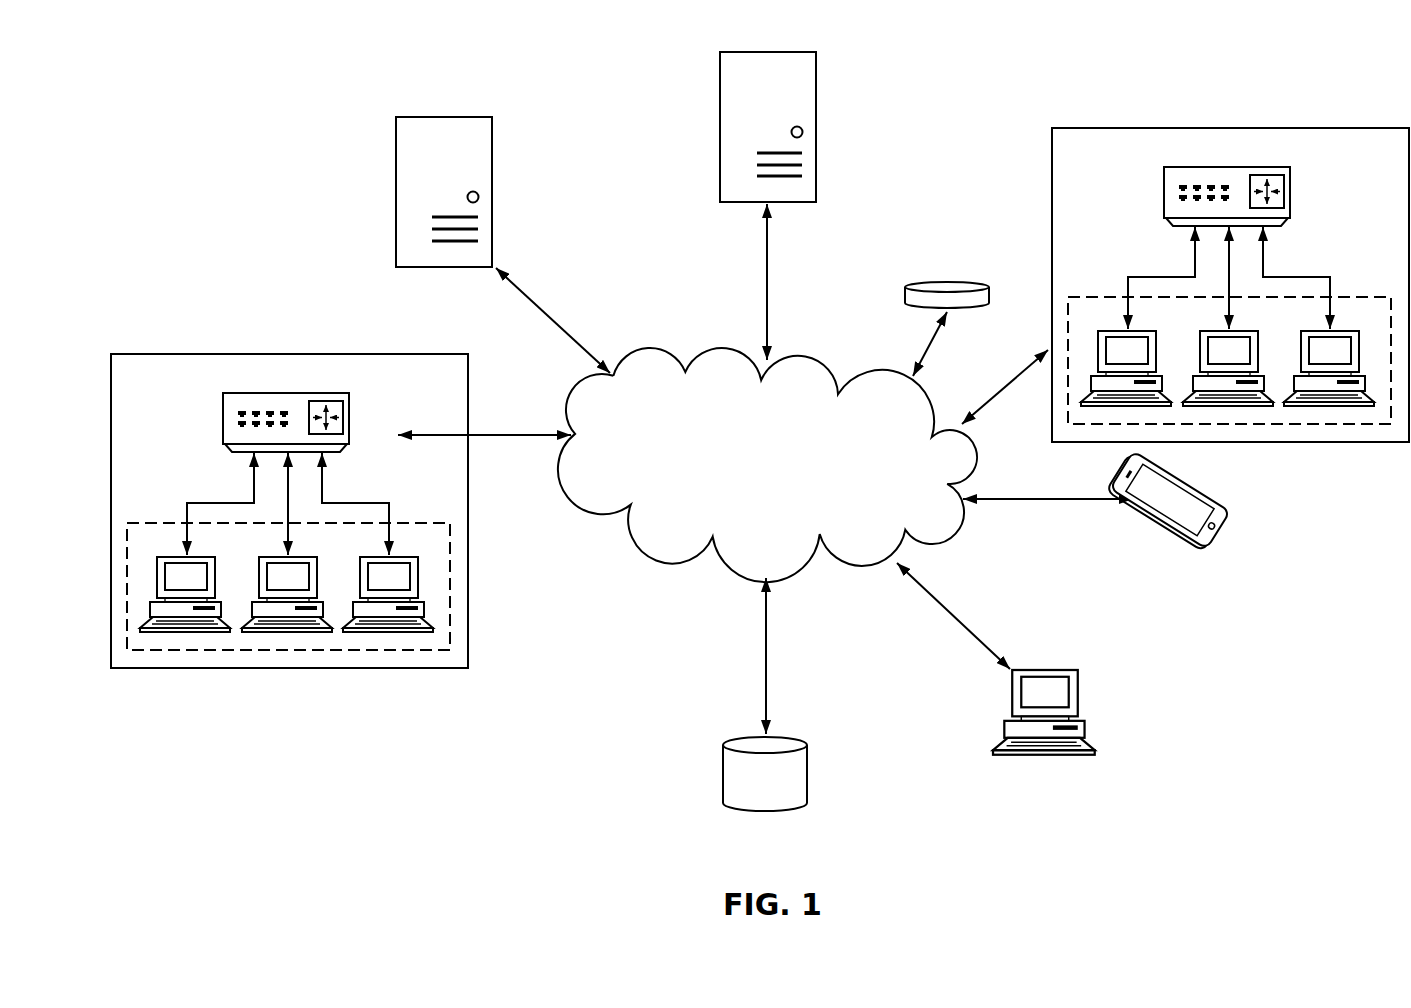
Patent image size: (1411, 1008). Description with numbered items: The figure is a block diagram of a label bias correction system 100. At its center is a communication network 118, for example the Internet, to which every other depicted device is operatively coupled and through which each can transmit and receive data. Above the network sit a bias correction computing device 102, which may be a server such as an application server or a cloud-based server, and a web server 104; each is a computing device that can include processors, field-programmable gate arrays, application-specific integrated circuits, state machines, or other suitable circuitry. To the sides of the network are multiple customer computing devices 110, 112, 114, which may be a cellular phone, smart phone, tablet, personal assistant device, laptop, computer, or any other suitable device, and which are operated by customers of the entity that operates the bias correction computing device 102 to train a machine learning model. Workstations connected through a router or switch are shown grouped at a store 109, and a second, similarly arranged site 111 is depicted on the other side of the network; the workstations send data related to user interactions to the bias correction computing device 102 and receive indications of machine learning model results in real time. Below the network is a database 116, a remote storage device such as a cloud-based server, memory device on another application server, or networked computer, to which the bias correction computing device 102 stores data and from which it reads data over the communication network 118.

The label bias correction system 100 is at (1156, 41).
The bias correction computing device 102 is at (784, 52).
The web server 104 is at (418, 117).
The store 109 is at (187, 354).
The customer computing device 110 is at (962, 282).
The local network site 111 is at (1278, 128).
The customer computing device 112 is at (1196, 488).
The customer computing device 114 is at (1068, 670).
The database 116 is at (797, 737).
The communication network 118 is at (808, 358).